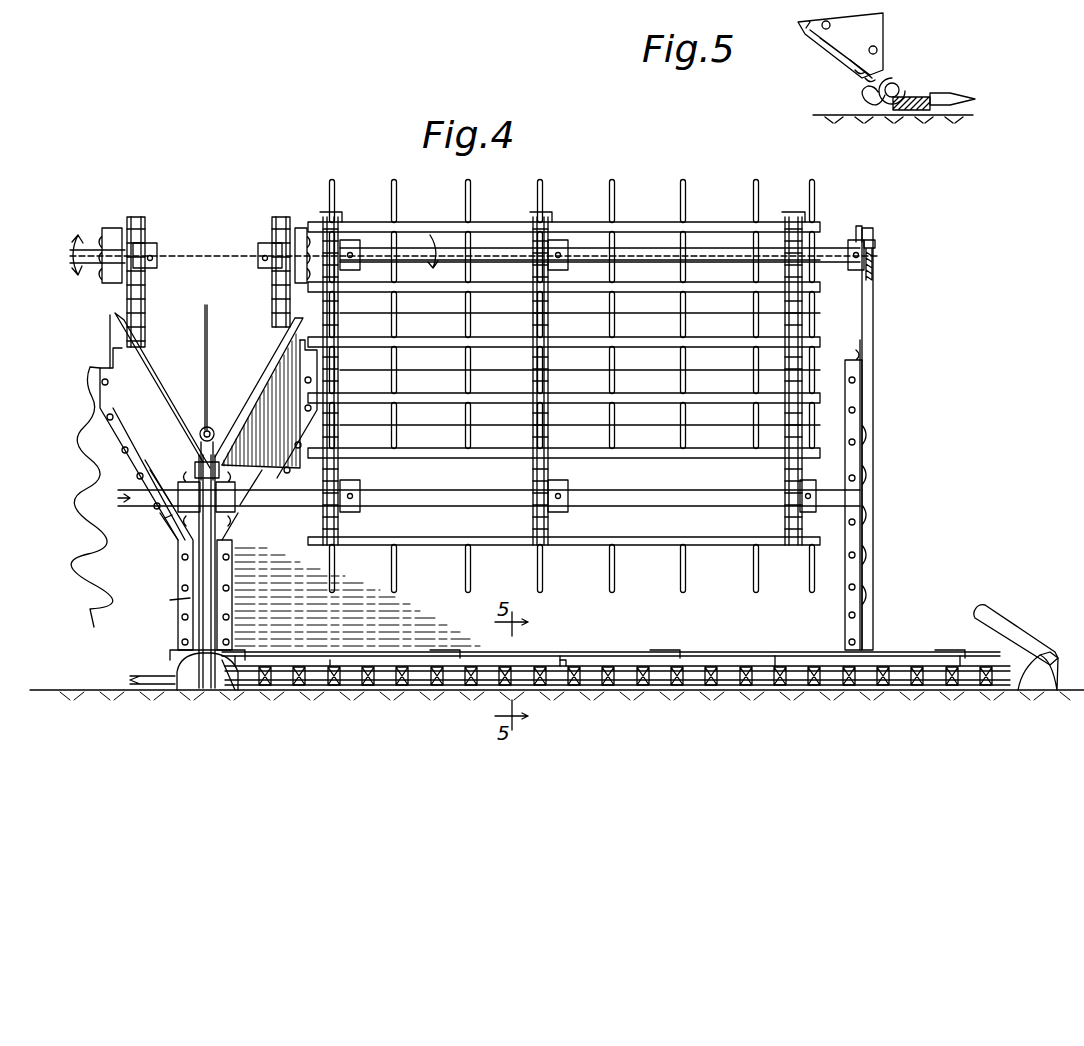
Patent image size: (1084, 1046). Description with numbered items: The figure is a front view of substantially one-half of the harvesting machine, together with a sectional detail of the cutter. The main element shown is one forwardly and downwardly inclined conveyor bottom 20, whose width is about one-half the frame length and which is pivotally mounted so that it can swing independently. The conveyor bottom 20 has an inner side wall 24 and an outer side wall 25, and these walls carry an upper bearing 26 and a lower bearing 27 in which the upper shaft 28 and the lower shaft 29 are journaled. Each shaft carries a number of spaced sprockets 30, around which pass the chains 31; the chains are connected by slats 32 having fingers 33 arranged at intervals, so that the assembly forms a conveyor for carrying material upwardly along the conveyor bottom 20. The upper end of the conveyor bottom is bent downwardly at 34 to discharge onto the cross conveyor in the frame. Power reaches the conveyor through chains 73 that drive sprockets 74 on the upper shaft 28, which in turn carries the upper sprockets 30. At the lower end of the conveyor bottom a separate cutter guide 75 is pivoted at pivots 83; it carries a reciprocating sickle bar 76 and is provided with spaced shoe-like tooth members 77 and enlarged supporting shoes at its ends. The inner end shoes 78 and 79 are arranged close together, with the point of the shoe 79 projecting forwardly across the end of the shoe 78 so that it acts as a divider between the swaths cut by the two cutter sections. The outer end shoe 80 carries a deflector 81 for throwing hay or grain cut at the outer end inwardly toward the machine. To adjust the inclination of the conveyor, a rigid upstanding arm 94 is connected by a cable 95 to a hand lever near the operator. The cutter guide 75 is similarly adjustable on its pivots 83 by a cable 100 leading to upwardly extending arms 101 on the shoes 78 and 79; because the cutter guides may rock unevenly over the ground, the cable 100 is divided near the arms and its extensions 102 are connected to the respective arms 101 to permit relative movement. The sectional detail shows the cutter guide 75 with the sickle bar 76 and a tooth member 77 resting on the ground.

In FIG. 5, the conveyor bottom 20 is at (825, 40).
In FIG. 4, the inner side wall 24 is at (160, 378).
In FIG. 4, the outer side wall 25 is at (872, 549).
In FIG. 4, the upper bearing 26 is at (856, 240).
In FIG. 4, the lower bearing 27 is at (170, 518).
In FIG. 4, the upper shaft 28 is at (68, 262).
In FIG. 4, the lower shaft 29 is at (128, 497).
In FIG. 4, the sprocket 30 is at (352, 240).
In FIG. 4, the chain 31 is at (530, 312).
In FIG. 4, the slat 32 is at (648, 404).
In FIG. 4, the finger 33 is at (753, 405).
In FIG. 4, the downwardly bent upper end 34 is at (410, 370).
In FIG. 4, the chain 73 is at (140, 316).
In FIG. 4, the sprocket 74 is at (157, 245).
In FIG. 4, the cutter guide 75 is at (667, 690).
In FIG. 5, the cutter guide 75 is at (903, 112).
In FIG. 4, the sickle bar 76 is at (452, 664).
In FIG. 5, the sickle bar 76 is at (925, 97).
In FIG. 4, the shoe like tooth member 77 is at (370, 688).
In FIG. 5, the shoe like tooth member 77 is at (960, 95).
In FIG. 4, the inner end shoe 78 is at (225, 680).
In FIG. 4, the inner end shoe 79 is at (175, 672).
In FIG. 4, the outer end shoe 80 is at (1036, 678).
In FIG. 4, the deflector 81 is at (1018, 630).
In FIG. 4, the pivot 83 is at (172, 665).
In FIG. 4, the upstanding arm 94 is at (873, 330).
In FIG. 4, the cable 95 is at (876, 250).
In FIG. 4, the cable 100 is at (196, 462).
In FIG. 4, the arm 101 is at (200, 610).
In FIG. 4, the cable extension 102 is at (198, 466).